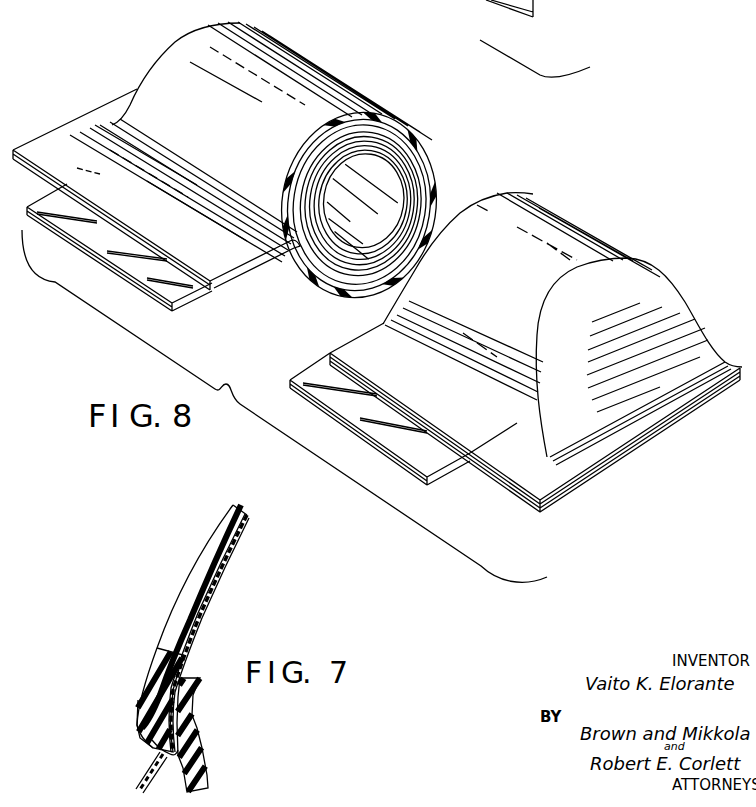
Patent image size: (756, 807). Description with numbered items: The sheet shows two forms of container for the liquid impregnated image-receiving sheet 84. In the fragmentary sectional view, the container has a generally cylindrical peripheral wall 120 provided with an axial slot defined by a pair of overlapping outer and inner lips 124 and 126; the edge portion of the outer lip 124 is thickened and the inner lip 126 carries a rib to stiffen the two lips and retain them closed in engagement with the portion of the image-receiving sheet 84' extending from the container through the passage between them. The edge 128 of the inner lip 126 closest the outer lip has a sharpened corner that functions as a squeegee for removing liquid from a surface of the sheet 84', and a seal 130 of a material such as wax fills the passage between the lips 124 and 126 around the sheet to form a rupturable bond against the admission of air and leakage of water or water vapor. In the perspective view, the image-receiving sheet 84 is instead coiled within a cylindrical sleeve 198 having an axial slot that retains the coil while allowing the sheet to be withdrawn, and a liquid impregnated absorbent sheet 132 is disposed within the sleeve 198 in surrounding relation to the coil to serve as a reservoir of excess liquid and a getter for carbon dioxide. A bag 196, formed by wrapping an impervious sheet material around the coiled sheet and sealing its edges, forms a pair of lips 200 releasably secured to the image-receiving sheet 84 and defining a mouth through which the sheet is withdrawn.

In FIG. 8, the bag 196 is at (282, 62).
In FIG. 8, the liquid impregnated absorbent sheet 132 is at (387, 112).
In FIG. 8, the cylindrical sleeve 198 is at (413, 140).
In FIG. 8, the image-receiving sheet 84 is at (258, 241).
In FIG. 8, the lips 200 is at (218, 278).
In FIG. 7, the peripheral wall 120 is at (197, 572).
In FIG. 7, the outer lip 124 is at (150, 703).
In FIG. 7, the inner lip 126 is at (196, 747).
In FIG. 7, the edge of inner lip 128 is at (179, 682).
In FIG. 7, the seal 130 is at (157, 742).
In FIG. 7, the sheet end 84' is at (122, 774).